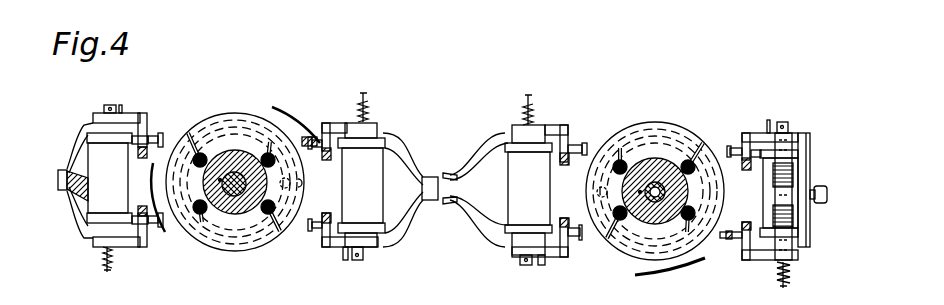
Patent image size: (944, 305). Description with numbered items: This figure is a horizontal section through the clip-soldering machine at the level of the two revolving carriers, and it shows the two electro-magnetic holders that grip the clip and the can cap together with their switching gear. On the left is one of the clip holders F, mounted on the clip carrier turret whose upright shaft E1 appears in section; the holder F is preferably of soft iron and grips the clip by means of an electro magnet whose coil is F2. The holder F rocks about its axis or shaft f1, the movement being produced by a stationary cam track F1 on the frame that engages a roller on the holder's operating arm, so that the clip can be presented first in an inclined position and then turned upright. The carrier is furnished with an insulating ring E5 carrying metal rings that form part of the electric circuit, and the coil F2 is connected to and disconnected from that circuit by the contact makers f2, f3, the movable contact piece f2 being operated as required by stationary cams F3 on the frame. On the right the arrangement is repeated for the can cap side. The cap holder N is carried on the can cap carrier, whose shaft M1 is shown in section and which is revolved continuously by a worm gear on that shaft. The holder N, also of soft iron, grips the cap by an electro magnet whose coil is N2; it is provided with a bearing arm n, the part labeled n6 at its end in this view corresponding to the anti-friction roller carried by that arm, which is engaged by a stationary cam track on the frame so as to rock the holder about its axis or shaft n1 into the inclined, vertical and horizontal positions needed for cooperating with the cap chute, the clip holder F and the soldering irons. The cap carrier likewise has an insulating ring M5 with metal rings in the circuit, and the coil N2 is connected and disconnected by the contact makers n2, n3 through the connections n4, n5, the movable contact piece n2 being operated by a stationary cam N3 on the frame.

The clip holder F is at (63, 167).
The stationary cam track F1 is at (427, 177).
The coil F2 is at (125, 180).
The stationary cams F3 is at (297, 92).
The axis or shaft f1 is at (383, 87).
The movable contact piece f2 is at (322, 107).
The contact maker f3 is at (155, 137).
The upright shaft E1 is at (221, 183).
The insulating ring E5 is at (228, 113).
The cap holder N is at (455, 200).
The coil N2 is at (827, 220).
The stationary cam N3 is at (660, 272).
The bearing arm n is at (812, 192).
The axis or shaft n1 is at (533, 103).
The movable contact piece n2 is at (580, 147).
The contact maker n3 is at (727, 123).
The connection n4 is at (573, 133).
The connection n5 is at (773, 93).
The knob n6 is at (823, 188).
The shaft M1 is at (650, 205).
The insulating ring M5 is at (667, 123).